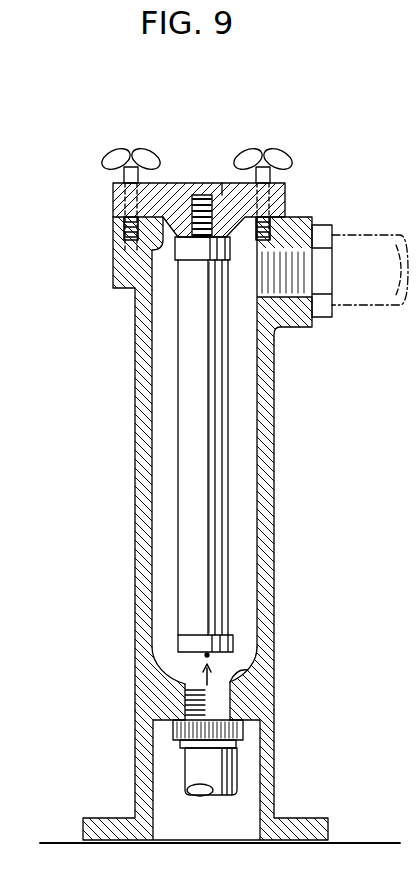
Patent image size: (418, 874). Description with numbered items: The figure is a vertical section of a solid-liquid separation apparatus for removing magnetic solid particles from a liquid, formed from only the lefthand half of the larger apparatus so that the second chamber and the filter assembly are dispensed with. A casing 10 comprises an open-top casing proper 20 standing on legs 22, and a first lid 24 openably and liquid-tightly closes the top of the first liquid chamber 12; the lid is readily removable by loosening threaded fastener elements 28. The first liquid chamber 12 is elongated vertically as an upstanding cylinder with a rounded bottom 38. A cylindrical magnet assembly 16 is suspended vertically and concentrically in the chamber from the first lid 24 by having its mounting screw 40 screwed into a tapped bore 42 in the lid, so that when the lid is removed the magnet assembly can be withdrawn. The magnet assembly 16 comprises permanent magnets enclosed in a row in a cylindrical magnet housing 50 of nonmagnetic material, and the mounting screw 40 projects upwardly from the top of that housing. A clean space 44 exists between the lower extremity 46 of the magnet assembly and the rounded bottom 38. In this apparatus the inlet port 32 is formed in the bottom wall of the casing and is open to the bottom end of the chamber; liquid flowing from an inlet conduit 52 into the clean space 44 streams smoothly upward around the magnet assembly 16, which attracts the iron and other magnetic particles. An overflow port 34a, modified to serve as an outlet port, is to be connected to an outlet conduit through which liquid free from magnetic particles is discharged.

The casing 10 is at (209, 437).
The first liquid chamber 12 is at (165, 478).
The magnet assembly 16 is at (178, 370).
The casing proper 20 is at (135, 320).
The legs 22 is at (143, 762).
The first lid 24 is at (168, 183).
The threaded fastener elements 28 is at (132, 150).
The inlet port 32 is at (218, 703).
The overflow port 34a is at (290, 222).
The rounded bottom 38 is at (232, 676).
The mounting screw 40 is at (200, 195).
The tapped bore 42 is at (222, 185).
The clean space 44 is at (225, 662).
The lower extremity 46 is at (206, 652).
The magnet housing 50 is at (190, 416).
The inlet conduit 52 is at (213, 765).